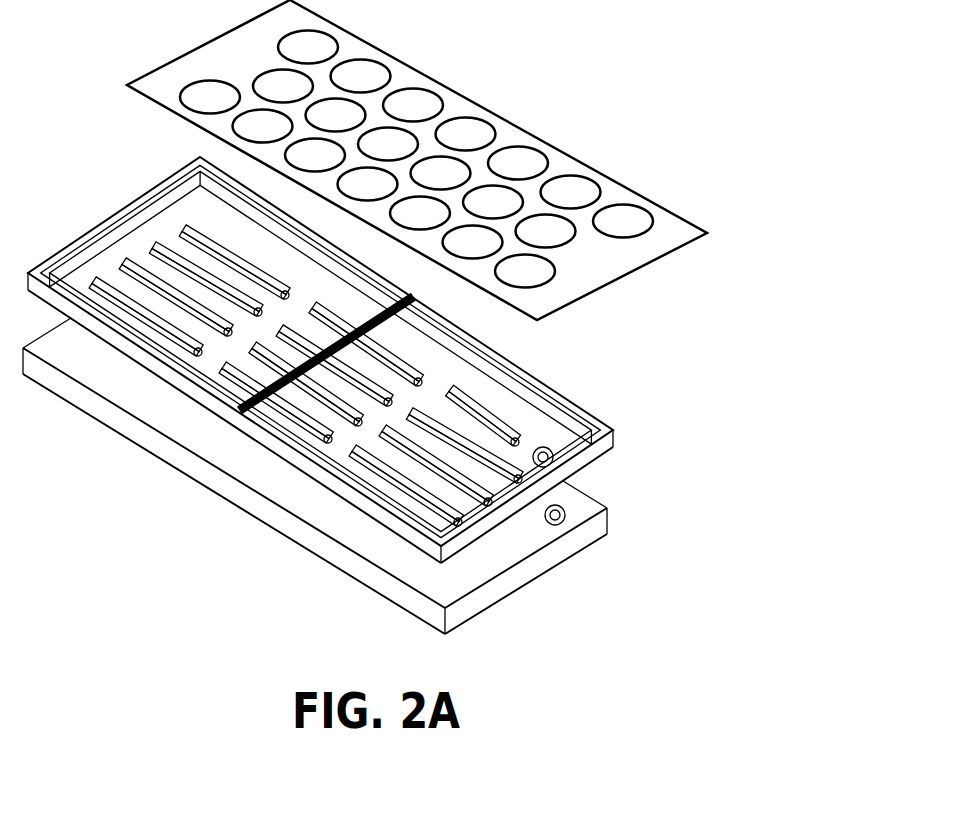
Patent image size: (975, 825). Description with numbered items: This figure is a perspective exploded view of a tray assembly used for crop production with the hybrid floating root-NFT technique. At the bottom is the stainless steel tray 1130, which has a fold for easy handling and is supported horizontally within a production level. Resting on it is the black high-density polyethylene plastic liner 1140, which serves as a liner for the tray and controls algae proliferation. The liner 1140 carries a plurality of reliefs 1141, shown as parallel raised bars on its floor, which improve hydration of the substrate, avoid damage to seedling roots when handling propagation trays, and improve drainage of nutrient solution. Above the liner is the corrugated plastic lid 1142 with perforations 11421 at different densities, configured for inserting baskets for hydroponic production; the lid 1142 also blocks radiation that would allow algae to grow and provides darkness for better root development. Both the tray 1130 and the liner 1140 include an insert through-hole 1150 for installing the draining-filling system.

The stainless steel tray 1130 is at (610, 523).
The high-density polyethylene plastic liner 1140 is at (399, 360).
The reliefs 1141 is at (480, 412).
The corrugated plastic lid 1142 is at (424, 160).
The perforations 11421 is at (200, 93).
The insert through-hole 1150 is at (553, 457).